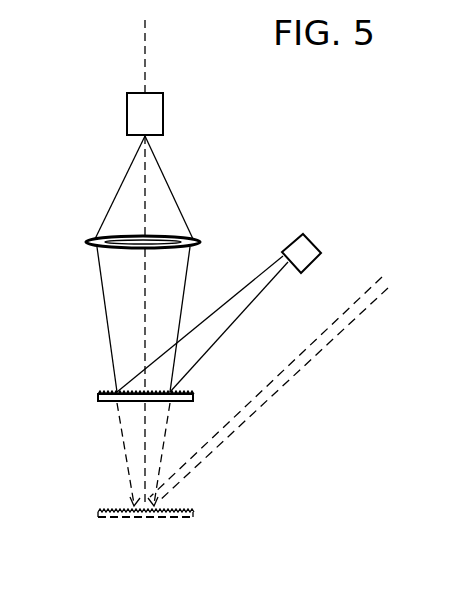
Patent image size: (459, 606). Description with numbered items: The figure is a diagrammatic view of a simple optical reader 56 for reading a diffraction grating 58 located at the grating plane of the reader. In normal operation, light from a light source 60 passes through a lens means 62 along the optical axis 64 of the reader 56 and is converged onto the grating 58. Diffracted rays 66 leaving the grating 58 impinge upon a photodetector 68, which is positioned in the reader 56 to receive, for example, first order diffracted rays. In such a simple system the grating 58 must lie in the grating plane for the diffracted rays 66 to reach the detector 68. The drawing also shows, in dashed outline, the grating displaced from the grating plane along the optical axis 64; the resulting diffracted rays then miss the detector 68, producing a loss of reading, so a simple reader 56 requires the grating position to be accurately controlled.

The optical reader 56 is at (87, 208).
The diffraction grating 58 is at (98, 393).
The light source 60 is at (164, 114).
The lens means 62 is at (172, 238).
The optical axis 64 is at (143, 50).
The diffracted rays 66 is at (233, 323).
The photodetector 68 is at (313, 243).